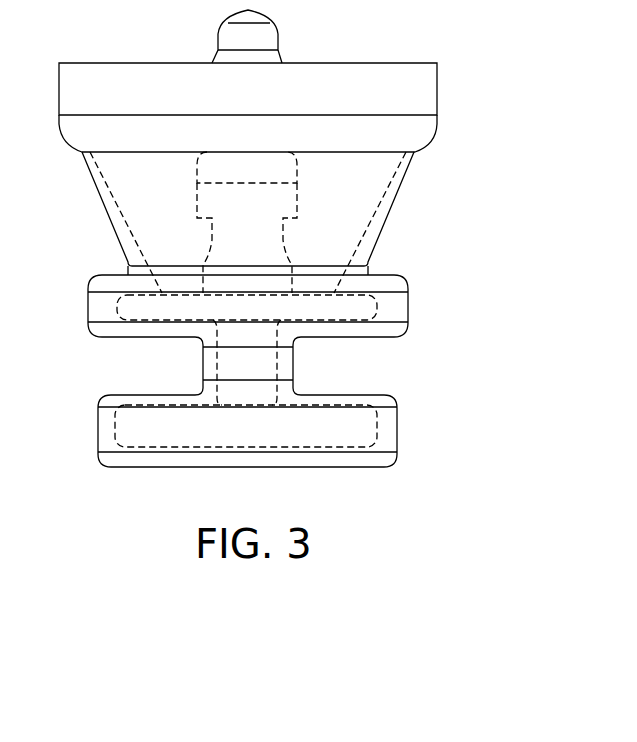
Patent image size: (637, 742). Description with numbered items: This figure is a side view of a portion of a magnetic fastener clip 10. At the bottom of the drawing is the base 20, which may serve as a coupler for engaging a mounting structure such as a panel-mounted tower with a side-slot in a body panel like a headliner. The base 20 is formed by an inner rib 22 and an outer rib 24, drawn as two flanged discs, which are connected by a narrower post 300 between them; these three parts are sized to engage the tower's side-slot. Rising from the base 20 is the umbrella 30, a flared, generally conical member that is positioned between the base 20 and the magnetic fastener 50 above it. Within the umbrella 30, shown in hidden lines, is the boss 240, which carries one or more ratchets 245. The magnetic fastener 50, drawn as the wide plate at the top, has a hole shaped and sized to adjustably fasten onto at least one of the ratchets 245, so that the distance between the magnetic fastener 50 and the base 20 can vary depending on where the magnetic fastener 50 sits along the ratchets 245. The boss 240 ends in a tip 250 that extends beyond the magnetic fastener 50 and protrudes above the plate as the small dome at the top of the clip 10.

The magnetic fastener clip 10 is at (513, 42).
The base 20 is at (440, 280).
The inner rib 22 is at (395, 311).
The outer rib 24 is at (390, 427).
The umbrella 30 is at (375, 237).
The magnetic fastener 50 is at (448, 63).
The boss 240 is at (240, 238).
The ratchets 245 is at (275, 172).
The tip 250 is at (255, 37).
The post 300 is at (288, 365).